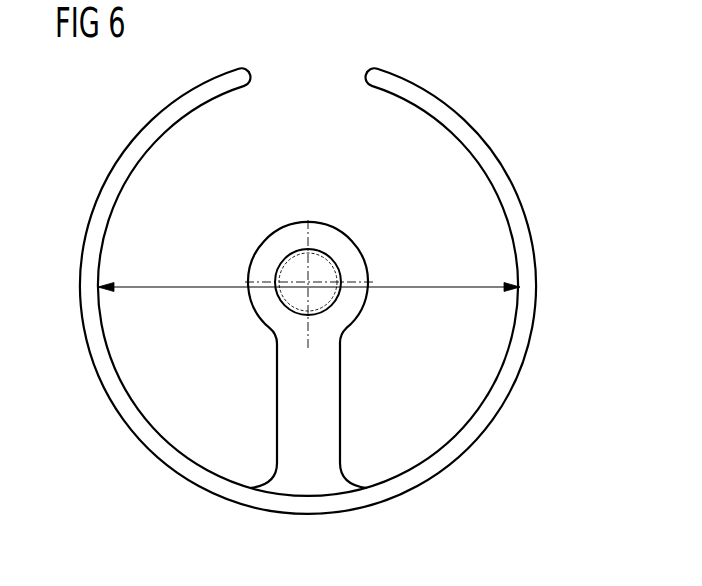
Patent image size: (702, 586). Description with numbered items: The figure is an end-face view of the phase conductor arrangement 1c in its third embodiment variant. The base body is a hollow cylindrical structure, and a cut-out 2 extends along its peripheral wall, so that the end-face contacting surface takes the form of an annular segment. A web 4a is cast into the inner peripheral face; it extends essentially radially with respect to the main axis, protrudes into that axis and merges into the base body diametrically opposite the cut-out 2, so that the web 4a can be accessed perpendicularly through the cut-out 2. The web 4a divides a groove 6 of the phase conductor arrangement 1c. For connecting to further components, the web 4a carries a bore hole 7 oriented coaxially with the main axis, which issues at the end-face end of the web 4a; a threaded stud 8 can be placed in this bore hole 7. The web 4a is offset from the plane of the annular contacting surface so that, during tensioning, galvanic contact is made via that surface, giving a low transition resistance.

The phase conductor arrangement 1c is at (537, 257).
The cut-out 2 is at (380, 61).
The groove 6 is at (488, 287).
The web 4a is at (340, 424).
The bore hole 7 is at (325, 255).
The threaded stud 8 is at (336, 294).